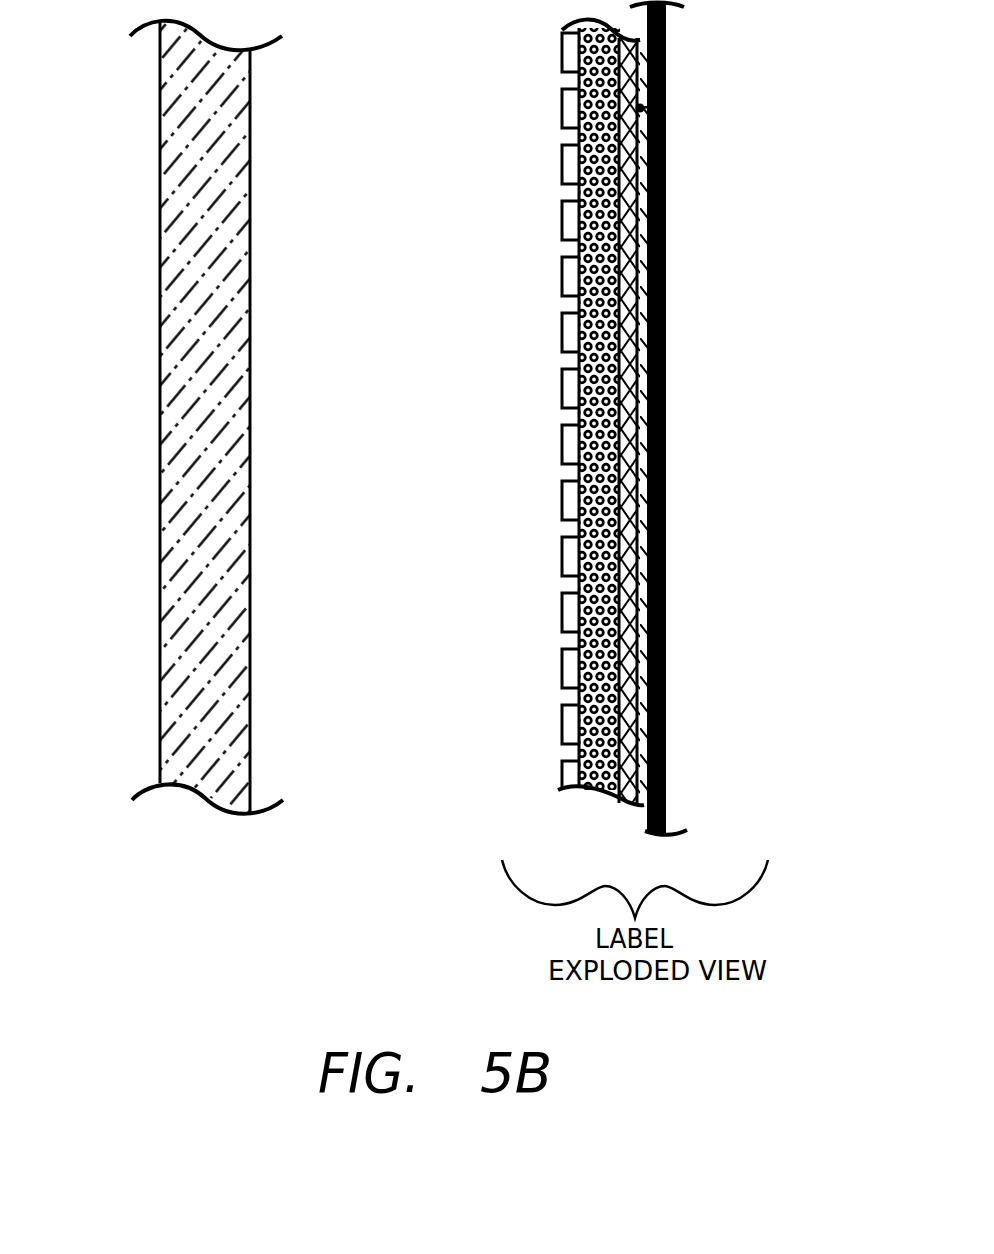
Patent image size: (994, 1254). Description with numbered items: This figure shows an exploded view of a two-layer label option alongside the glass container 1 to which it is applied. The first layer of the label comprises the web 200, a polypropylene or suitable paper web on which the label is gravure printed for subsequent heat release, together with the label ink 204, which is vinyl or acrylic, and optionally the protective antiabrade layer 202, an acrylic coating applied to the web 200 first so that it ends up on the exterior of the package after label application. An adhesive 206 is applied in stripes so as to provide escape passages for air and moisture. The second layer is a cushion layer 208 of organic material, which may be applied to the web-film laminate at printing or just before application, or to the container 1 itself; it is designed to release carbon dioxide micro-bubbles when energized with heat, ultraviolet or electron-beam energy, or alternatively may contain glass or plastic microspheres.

The glass container 1 is at (202, 213).
The web 200 is at (665, 298).
The protective antiabrade layer 202 is at (664, 105).
The label ink 204 is at (630, 648).
The adhesive 206 is at (570, 282).
The cushion layer 208 is at (600, 468).